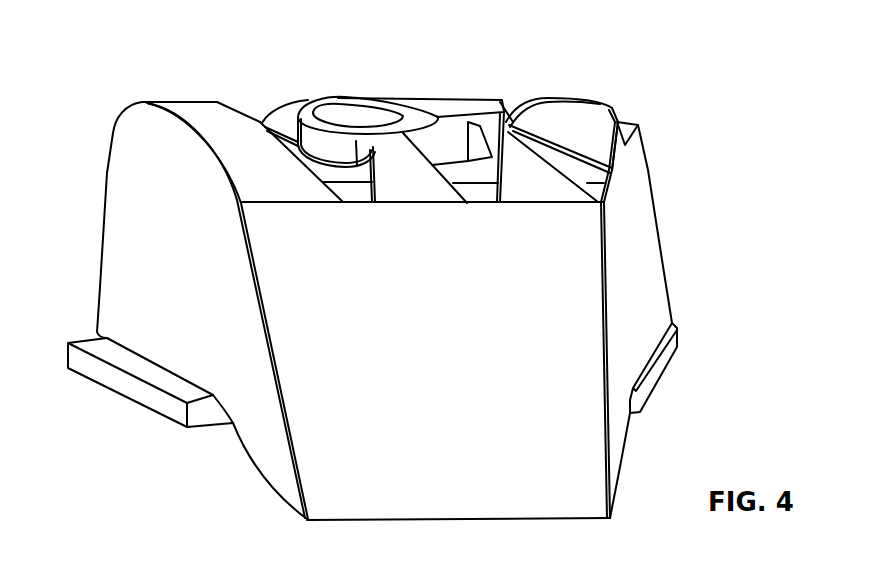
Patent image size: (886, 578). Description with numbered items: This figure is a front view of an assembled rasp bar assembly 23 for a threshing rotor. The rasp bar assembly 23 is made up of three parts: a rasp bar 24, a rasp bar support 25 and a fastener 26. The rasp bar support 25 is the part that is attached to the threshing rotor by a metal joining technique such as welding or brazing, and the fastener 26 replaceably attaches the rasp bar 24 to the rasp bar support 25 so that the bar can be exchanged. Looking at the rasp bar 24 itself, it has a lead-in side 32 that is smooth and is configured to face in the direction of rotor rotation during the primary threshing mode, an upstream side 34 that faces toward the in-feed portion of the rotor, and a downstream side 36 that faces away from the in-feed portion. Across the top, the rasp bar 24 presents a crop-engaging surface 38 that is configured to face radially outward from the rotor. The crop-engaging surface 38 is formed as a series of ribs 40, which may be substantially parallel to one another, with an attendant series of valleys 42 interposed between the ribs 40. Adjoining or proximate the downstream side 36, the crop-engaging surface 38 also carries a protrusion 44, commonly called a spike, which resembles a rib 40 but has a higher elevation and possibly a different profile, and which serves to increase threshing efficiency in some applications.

The rasp bar assembly 23 is at (111, 96).
The rasp bar 24 is at (647, 145).
The rasp bar support 25 is at (129, 381).
The fastener 26 is at (402, 128).
The lead-in side 32 is at (433, 389).
The upstream side 34 is at (643, 240).
The downstream side 36 is at (169, 291).
The crop-engaging surface 38 is at (522, 147).
The ribs 40 is at (392, 167).
The valleys 42 is at (292, 143).
The protrusion 44 is at (207, 118).